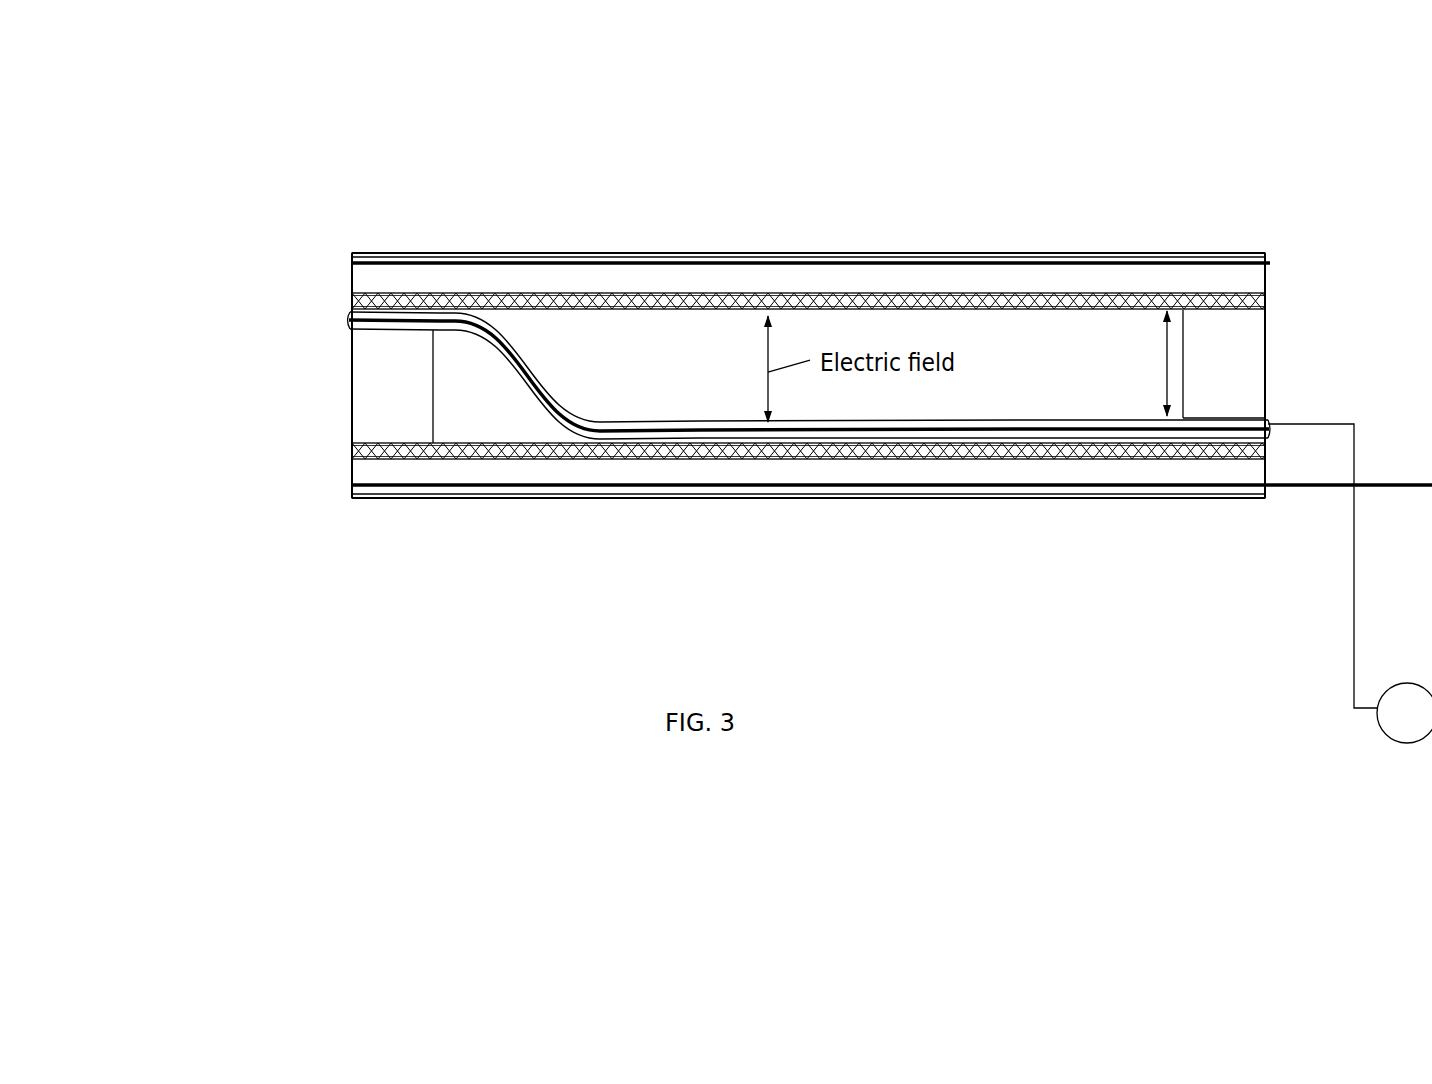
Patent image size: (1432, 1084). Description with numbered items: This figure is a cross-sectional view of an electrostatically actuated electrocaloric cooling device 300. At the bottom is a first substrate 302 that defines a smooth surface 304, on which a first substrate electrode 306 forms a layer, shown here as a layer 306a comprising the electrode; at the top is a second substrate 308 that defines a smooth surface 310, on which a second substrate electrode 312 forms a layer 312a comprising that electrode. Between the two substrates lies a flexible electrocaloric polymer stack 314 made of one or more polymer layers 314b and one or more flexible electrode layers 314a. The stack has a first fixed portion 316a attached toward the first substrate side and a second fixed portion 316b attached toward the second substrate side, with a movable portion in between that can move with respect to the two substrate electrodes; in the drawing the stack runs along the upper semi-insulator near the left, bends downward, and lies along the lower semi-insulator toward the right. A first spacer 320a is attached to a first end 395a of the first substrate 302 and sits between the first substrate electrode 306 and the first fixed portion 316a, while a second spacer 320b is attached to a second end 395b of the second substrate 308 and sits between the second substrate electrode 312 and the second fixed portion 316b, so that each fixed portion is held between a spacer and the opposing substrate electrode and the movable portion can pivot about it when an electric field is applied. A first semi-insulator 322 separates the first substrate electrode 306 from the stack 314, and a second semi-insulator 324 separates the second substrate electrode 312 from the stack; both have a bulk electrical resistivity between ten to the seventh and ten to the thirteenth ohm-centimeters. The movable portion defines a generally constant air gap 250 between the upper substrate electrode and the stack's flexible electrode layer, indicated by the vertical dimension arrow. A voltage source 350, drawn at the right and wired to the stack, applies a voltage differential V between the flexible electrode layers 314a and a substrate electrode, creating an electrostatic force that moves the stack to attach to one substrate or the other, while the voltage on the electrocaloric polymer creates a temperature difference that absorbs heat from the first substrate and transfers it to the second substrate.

The air gap 250 is at (1165, 336).
The electrostatically actuated electrocaloric cooling device 300 is at (488, 610).
The first substrate 302 is at (513, 497).
The smooth surface 304 is at (655, 486).
The first substrate electrode 306 is at (837, 480).
The layer comprising the first substrate electrode 306a is at (1116, 515).
The second substrate 308 is at (533, 238).
The smooth surface 310 is at (612, 258).
The second substrate electrode 312 is at (823, 273).
The layer comprising the second substrate electrode 312a is at (1035, 239).
The flexible electrocaloric stack 314 is at (505, 368).
The flexible electrode layers 314a is at (1087, 422).
The polymer layers 314b is at (997, 432).
The first fixed portion 316a is at (383, 297).
The second fixed portion 316b is at (1238, 425).
The first spacer 320a is at (1225, 357).
The second spacer 320b is at (395, 396).
The first semi-insulator 322 is at (352, 450).
The second semi-insulator 324 is at (352, 300).
The voltage source 350 is at (1362, 732).
The first end 395a is at (290, 255).
The second end 395b is at (1283, 290).